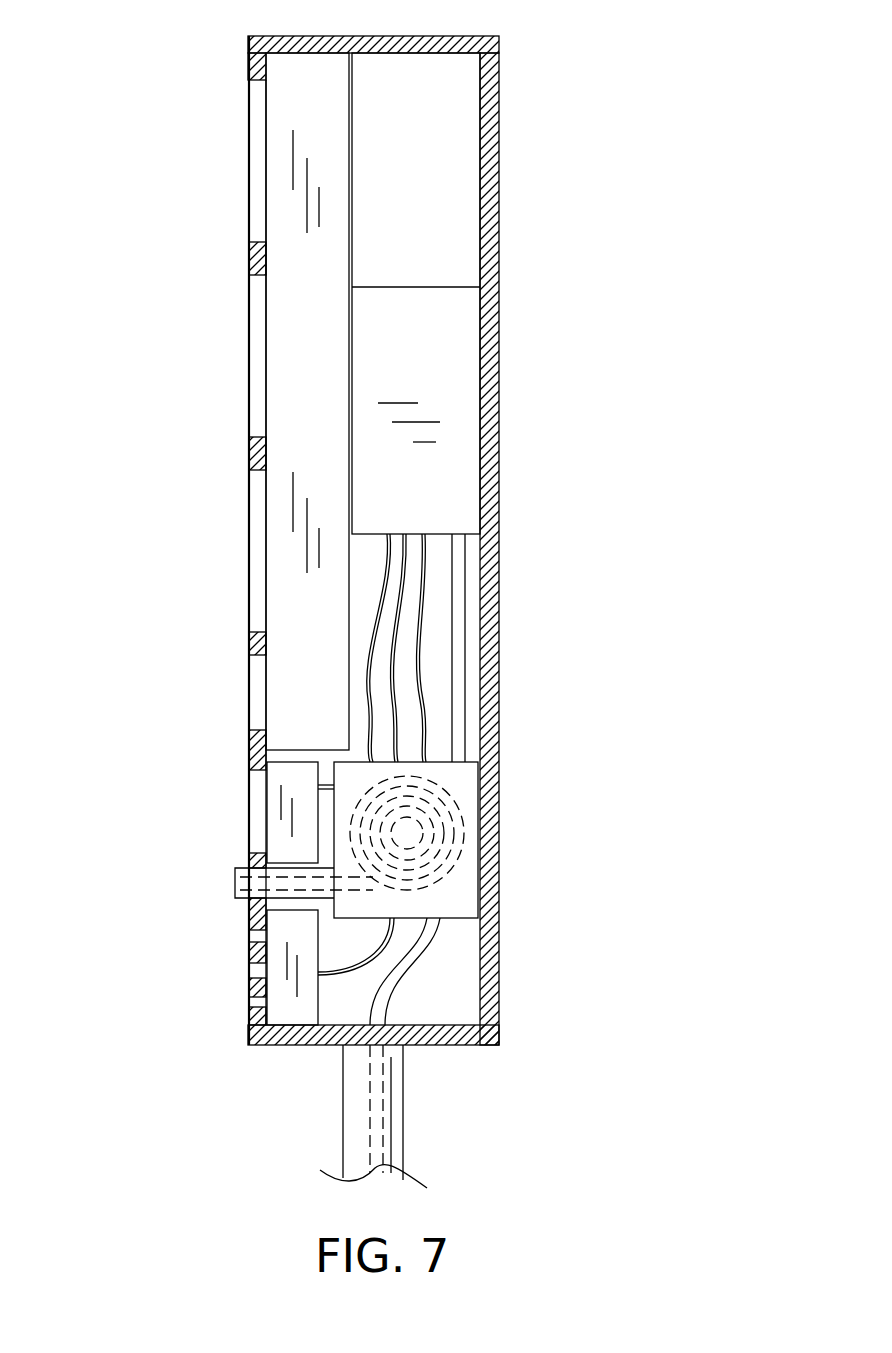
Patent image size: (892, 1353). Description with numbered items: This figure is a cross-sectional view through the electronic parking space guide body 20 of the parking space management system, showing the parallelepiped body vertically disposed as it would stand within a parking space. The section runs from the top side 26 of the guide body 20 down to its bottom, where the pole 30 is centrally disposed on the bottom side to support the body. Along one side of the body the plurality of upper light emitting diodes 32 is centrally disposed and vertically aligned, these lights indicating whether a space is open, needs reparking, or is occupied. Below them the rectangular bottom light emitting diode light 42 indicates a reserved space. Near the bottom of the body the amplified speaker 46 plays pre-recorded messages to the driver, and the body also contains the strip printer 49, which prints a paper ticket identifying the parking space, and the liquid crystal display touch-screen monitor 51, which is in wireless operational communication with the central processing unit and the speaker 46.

The electronic parking space guide body 20 is at (498, 36).
The top side 26 is at (260, 36).
The pole 30 is at (403, 1122).
The upper light emitting diodes 32 is at (249, 153).
The bottom light emitting diode light 42 is at (257, 687).
The amplified speaker 46 is at (290, 1003).
The strip printer 49 is at (460, 840).
The liquid crystal display touch-screen monitor 51 is at (262, 810).